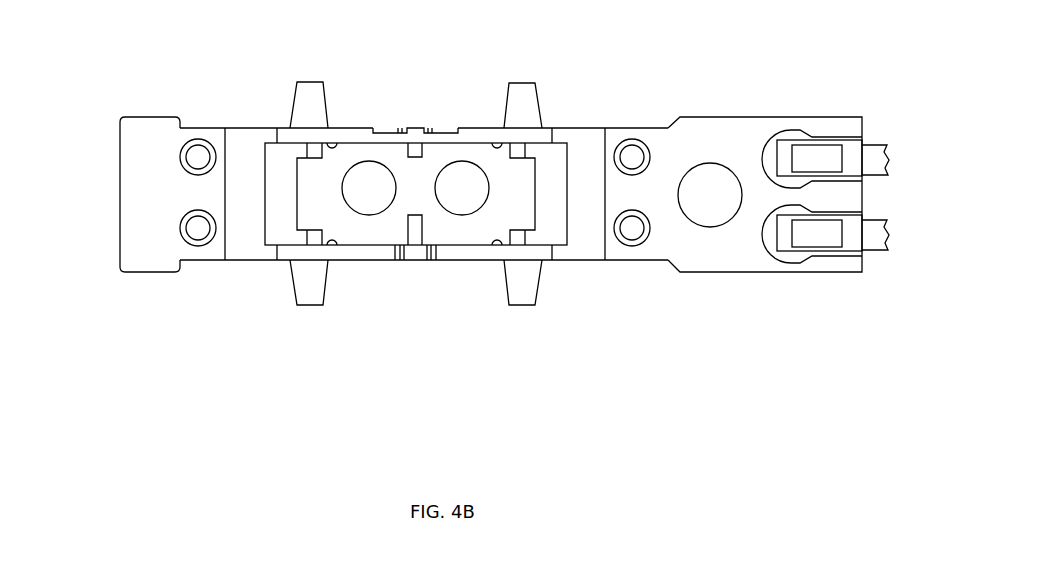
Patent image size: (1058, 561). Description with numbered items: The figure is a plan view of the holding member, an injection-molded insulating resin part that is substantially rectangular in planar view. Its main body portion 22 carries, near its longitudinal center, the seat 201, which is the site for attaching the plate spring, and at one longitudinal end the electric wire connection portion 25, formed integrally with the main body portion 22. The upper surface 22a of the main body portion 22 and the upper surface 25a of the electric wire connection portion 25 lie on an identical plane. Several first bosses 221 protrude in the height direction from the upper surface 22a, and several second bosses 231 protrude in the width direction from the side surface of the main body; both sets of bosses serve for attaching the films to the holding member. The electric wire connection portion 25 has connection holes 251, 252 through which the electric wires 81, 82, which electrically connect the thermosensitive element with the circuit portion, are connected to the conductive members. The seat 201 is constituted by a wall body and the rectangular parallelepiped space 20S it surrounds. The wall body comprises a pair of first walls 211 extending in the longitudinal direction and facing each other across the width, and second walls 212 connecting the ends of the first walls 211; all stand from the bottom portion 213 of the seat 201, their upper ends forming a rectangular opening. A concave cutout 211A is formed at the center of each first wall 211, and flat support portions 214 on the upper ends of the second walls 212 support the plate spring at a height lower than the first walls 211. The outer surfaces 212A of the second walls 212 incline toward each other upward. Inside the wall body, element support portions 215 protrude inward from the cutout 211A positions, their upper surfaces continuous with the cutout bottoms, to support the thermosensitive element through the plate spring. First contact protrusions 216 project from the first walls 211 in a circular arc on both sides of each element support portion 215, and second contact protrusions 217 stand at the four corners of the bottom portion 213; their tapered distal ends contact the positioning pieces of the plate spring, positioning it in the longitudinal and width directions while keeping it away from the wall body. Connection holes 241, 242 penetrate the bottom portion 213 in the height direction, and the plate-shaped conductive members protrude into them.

The seat 201 is at (263, 128).
The space 20S is at (432, 199).
The first wall 211 is at (467, 128).
The cutout 211A is at (412, 128).
The second wall 212 is at (295, 165).
The outer surface 212A is at (247, 243).
The bottom portion 213 is at (419, 255).
The support portion 214 is at (265, 200).
The element support portion 215 is at (355, 208).
The first contact protrusion 216 is at (513, 148).
The second contact protrusion 217 is at (331, 140).
The main body portion 22 is at (150, 118).
The upper surface 22a is at (127, 142).
The first boss 221 is at (197, 137).
The second boss 231 is at (310, 82).
The connection hole 241 is at (370, 175).
The connection hole 242 is at (470, 172).
The electric wire connection portion 25 is at (826, 117).
The upper surface 25a is at (728, 127).
The connection hole 251 is at (778, 252).
The connection hole 252 is at (770, 140).
The electric wire 81 is at (872, 262).
The electric wire 82 is at (880, 140).